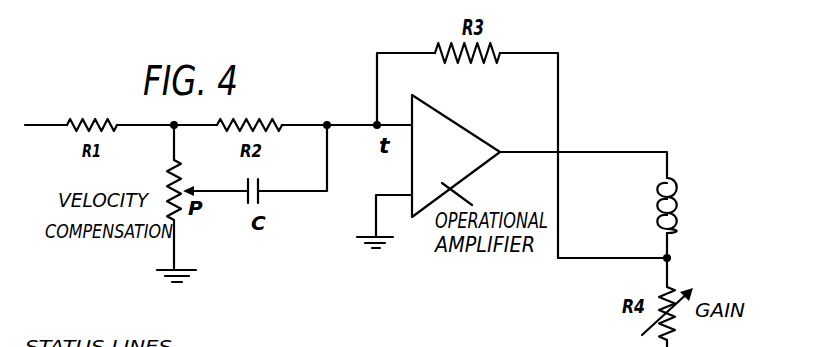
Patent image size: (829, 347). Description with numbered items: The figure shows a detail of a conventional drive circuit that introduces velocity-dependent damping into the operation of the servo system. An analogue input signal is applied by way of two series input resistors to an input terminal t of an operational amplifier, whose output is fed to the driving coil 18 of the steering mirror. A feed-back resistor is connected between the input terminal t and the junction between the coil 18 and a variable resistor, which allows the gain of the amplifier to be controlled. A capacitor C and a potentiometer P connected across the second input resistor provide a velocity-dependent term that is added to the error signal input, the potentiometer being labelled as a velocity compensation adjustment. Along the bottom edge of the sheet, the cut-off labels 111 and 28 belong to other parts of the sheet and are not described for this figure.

The driving coil 18 is at (660, 192).
The status lines 111 is at (214, 342).
The status line element (cut off) 28 is at (314, 342).